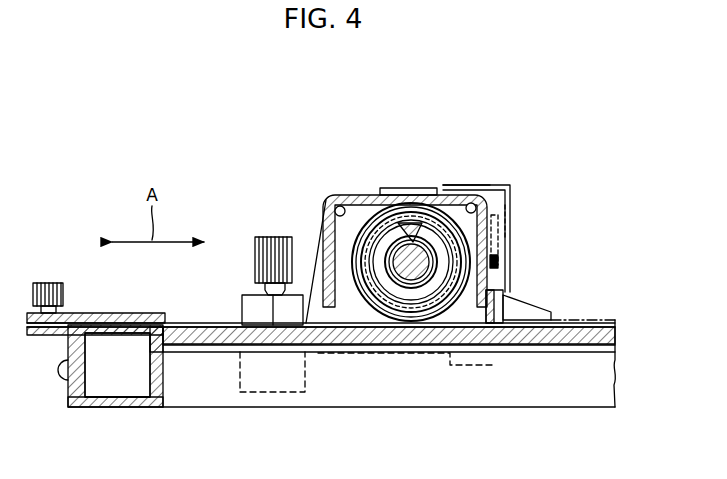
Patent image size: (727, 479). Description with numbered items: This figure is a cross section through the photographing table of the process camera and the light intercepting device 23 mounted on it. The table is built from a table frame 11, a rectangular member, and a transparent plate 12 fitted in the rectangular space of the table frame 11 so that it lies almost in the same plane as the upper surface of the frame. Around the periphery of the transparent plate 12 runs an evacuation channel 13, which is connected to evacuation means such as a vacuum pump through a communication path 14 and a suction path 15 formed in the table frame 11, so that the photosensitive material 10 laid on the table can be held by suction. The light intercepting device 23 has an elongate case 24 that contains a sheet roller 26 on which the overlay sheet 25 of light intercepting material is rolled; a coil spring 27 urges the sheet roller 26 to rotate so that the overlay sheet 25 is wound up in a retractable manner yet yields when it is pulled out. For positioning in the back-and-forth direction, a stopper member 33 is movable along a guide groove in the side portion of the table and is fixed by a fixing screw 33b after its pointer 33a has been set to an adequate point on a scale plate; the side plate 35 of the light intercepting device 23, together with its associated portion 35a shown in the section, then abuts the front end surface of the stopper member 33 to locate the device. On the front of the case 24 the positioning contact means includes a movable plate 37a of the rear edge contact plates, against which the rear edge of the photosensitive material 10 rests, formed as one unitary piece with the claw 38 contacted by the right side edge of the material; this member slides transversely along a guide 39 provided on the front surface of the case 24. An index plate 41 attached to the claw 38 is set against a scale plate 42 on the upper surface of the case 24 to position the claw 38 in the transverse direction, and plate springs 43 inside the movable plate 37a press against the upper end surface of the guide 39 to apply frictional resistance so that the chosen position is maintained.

The photosensitive material 10 is at (600, 320).
The table frame 11 is at (164, 392).
The transparent plate 12 is at (543, 345).
The evacuation channel 13 is at (156, 325).
The communication path 14 is at (148, 339).
The suction path 15 is at (112, 397).
The light intercepting device 23 is at (517, 175).
The elongate case 24 is at (372, 195).
The overlay sheet 25 is at (104, 313).
The sheet roller 26 is at (358, 215).
The coil spring 27 is at (428, 245).
The stopper member 33 is at (242, 304).
The pointer 33a is at (290, 325).
The fixing screw 33b is at (270, 237).
The side plate 35 is at (313, 225).
The support plate lower edge 35a is at (445, 357).
The movable plate 37a is at (496, 327).
The claw 38 is at (525, 300).
The guide 39 is at (496, 250).
The index plate 41 is at (462, 187).
The scale plate 42 is at (407, 188).
The plate springs 43 is at (505, 210).